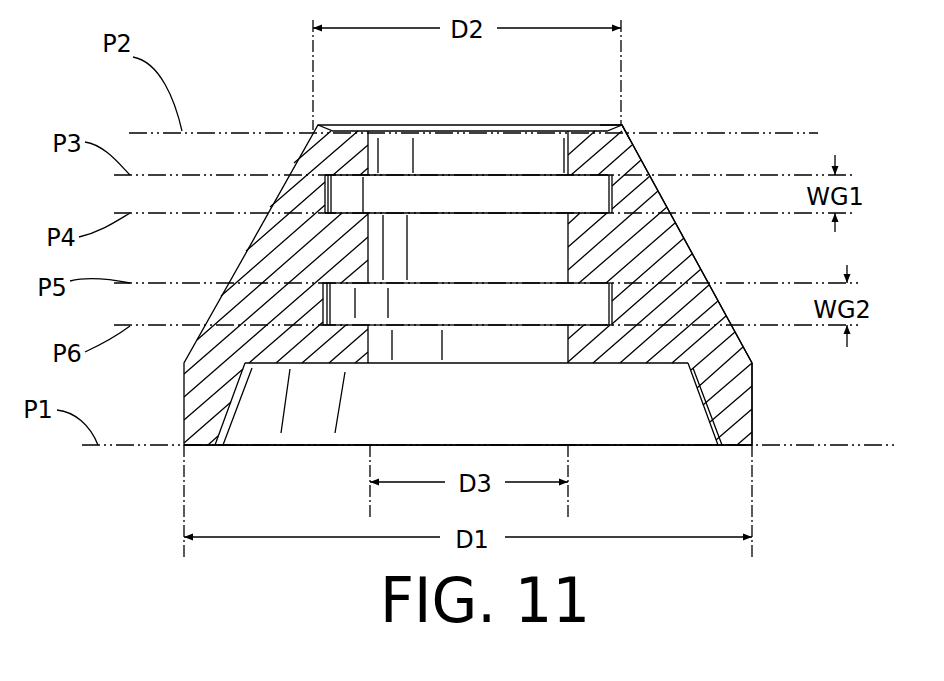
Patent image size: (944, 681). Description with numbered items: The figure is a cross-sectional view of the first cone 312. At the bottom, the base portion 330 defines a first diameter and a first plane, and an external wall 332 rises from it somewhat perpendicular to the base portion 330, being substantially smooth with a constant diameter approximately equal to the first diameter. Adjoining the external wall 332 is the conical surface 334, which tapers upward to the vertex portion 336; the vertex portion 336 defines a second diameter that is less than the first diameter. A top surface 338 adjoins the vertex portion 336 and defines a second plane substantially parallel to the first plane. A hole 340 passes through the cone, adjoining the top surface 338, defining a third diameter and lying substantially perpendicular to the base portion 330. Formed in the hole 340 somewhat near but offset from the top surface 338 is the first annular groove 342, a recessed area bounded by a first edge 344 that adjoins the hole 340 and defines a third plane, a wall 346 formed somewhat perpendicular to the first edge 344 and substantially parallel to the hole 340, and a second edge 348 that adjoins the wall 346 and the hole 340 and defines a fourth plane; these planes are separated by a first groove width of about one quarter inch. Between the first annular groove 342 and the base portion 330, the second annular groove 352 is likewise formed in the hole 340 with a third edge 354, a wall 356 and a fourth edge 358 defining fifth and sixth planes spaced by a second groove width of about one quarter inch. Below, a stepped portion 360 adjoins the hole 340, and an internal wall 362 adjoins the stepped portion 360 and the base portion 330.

The first cone 312 is at (682, 57).
The base portion 330 is at (737, 448).
The external wall 332 is at (752, 394).
The conical surface 334 is at (678, 263).
The vertex portion 336 is at (618, 126).
The top surface 338 is at (363, 132).
The hole 340 is at (612, 216).
The first annular groove 342 is at (398, 190).
The first edge 344 is at (452, 174).
The first annular groove wall 346 is at (350, 191).
The second edge 348 is at (568, 237).
The second annular groove 352 is at (528, 305).
The third edge 354 is at (395, 288).
The second annular groove wall 356 is at (348, 297).
The fourth edge 358 is at (432, 320).
The stepped portion 360 is at (647, 363).
The internal wall 362 is at (683, 432).